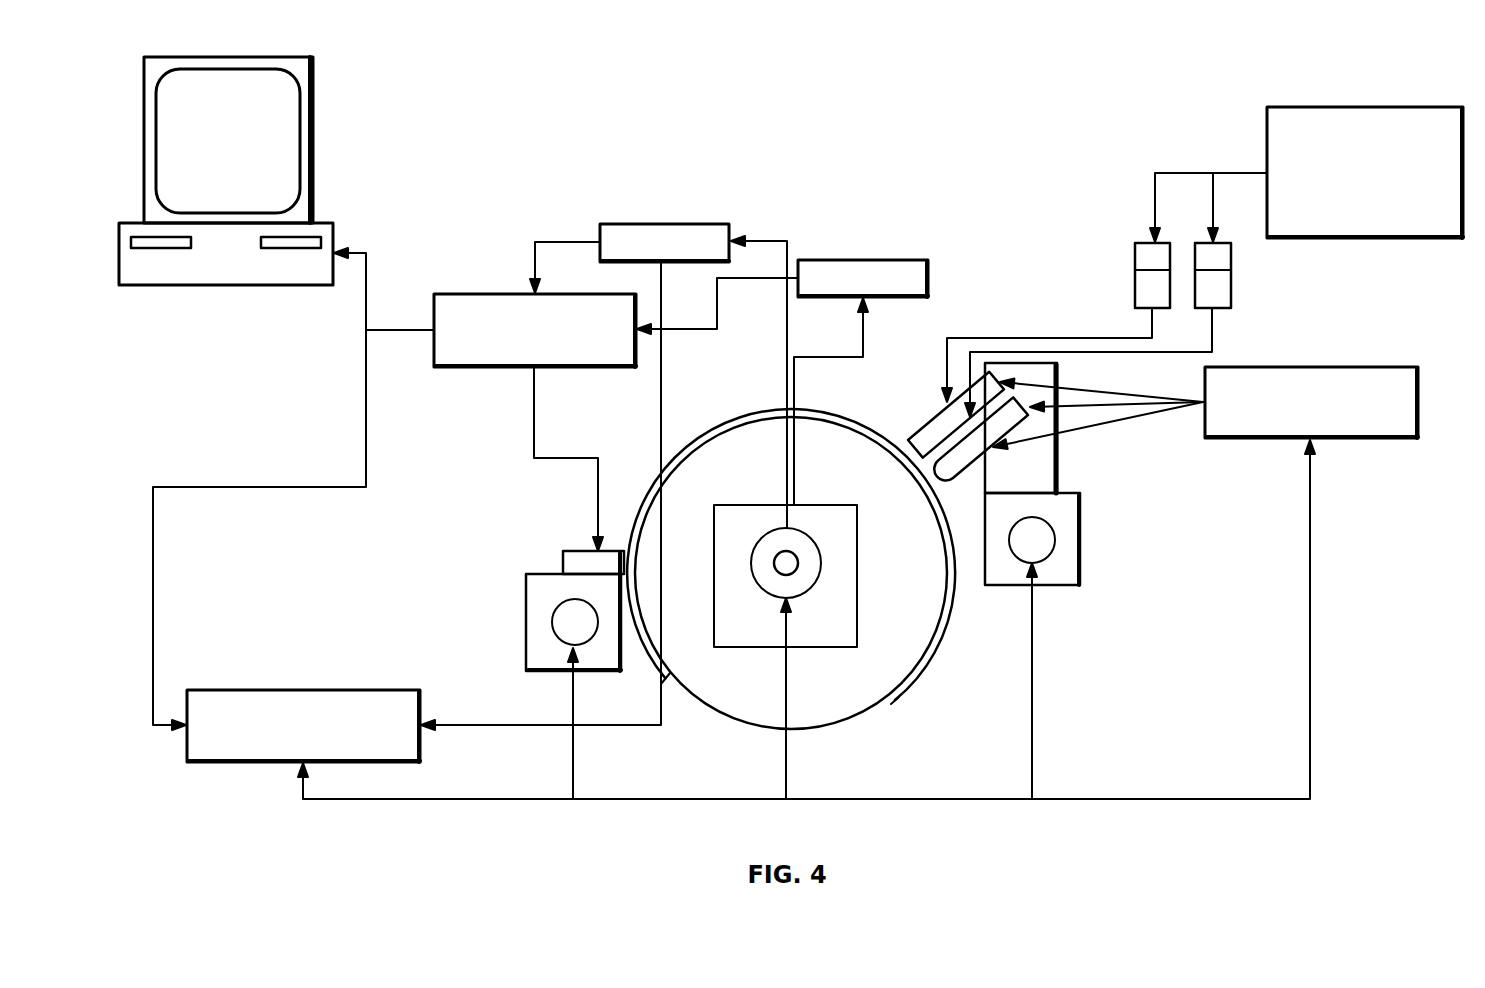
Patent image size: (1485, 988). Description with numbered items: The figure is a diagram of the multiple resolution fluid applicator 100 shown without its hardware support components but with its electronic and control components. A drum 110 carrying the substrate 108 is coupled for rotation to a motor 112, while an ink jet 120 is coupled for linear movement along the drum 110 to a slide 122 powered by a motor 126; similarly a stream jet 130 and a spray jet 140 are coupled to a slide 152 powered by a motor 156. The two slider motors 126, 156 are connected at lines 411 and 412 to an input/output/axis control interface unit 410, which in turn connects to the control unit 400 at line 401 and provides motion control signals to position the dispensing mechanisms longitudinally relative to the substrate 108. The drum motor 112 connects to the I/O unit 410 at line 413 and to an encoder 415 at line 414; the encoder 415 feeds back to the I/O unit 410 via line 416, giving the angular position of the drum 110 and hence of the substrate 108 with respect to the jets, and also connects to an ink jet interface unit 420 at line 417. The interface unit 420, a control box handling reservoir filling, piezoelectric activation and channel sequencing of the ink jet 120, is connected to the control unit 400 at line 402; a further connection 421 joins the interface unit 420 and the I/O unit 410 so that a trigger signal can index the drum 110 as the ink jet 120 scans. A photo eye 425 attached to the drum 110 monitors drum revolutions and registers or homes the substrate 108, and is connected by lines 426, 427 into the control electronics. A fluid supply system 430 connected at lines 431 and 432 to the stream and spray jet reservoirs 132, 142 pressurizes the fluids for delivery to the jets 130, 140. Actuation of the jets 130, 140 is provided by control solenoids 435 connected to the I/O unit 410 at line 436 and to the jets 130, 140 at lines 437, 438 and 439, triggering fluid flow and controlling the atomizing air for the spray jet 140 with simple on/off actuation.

The fluid applicator 100 is at (957, 125).
The substrate 108 is at (952, 625).
The drum 110 is at (858, 688).
The motor 112 is at (820, 577).
The ink jet 120 is at (583, 551).
The slide 122 is at (526, 643).
The motor 126 is at (553, 608).
The stream jet 130 is at (915, 428).
The stream jet reservoir 132 is at (1135, 282).
The spray jet 140 is at (1005, 420).
The spray jet reservoir 142 is at (1231, 282).
The slide 152 is at (1080, 563).
The motor 156 is at (1057, 540).
The control unit 400 is at (226, 57).
The line 401 is at (208, 487).
The line 402 is at (385, 276).
The input/output/axis control interface unit 410 is at (255, 690).
The line 411 is at (573, 752).
The line 412 is at (1032, 735).
The line 413 is at (786, 752).
The line 414 is at (787, 348).
The encoder 415 is at (660, 224).
The line 416 is at (661, 402).
The line 417 is at (552, 240).
The ink jet interface unit 420 is at (487, 293).
The printhead data line 421 is at (534, 403).
The photo eye 425 is at (862, 260).
The sensor signal line 426 is at (865, 337).
The acquired data line 427 is at (717, 295).
The fluid supply system 430 is at (1305, 107).
The line 431 is at (1155, 187).
The line 432 is at (1215, 185).
The control solenoids 435 is at (1345, 367).
The line 436 is at (1310, 598).
The line 437 is at (1077, 388).
The line 438 is at (1102, 405).
The line 439 is at (1167, 410).